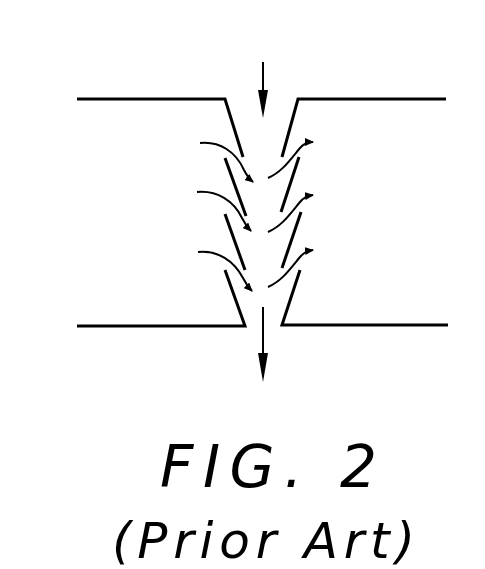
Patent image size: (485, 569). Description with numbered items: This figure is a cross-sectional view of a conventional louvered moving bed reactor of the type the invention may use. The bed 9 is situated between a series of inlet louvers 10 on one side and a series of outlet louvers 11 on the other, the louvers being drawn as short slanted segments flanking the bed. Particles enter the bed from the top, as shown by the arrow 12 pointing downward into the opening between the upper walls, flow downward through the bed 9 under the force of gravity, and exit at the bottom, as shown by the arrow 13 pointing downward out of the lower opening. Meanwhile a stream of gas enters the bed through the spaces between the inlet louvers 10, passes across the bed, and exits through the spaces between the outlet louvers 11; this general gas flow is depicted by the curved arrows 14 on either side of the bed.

The bed 9 is at (260, 205).
The inlet louvers 10 is at (228, 227).
The outlet louvers 11 is at (292, 237).
The arrow 12 is at (263, 73).
The arrow 13 is at (263, 338).
The arrows 14 is at (212, 143).